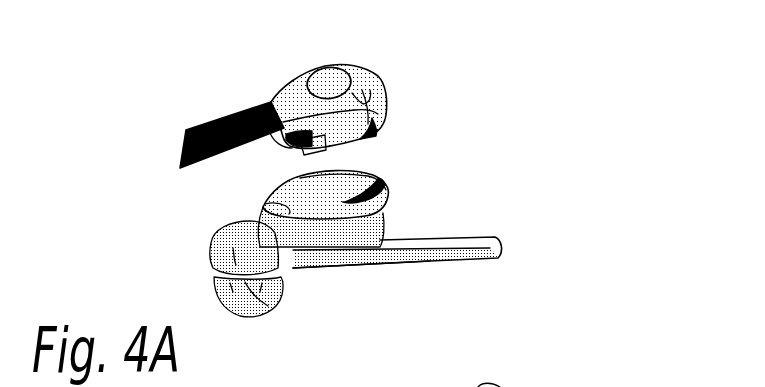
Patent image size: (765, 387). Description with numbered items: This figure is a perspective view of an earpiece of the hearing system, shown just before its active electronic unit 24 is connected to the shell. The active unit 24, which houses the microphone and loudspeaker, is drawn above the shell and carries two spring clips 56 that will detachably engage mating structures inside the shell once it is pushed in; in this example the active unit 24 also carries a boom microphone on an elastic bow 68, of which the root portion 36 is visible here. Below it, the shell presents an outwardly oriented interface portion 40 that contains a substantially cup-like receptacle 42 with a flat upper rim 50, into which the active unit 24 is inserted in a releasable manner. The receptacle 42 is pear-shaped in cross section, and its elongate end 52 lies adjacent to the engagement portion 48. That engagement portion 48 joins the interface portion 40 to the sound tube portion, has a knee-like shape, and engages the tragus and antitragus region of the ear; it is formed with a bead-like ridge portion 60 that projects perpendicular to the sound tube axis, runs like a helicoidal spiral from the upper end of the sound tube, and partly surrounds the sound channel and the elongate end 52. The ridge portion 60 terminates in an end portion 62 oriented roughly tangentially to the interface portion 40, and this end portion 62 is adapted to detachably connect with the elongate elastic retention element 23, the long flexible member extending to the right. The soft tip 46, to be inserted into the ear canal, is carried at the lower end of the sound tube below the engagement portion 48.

The retention element 23 is at (441, 252).
The active electronic unit 24 is at (380, 70).
The shaft 36 is at (231, 113).
The interface portion 40 is at (398, 195).
The receptacle 42 is at (378, 175).
The soft tip 46 is at (213, 250).
The engagement portion 48 is at (222, 222).
The upper rim 50 is at (344, 201).
The elongate end 52 is at (276, 210).
The spring clips 56 is at (343, 62).
The ridge portion 60 is at (258, 247).
The end portion 62 is at (307, 257).
The bow 68 is at (220, 150).